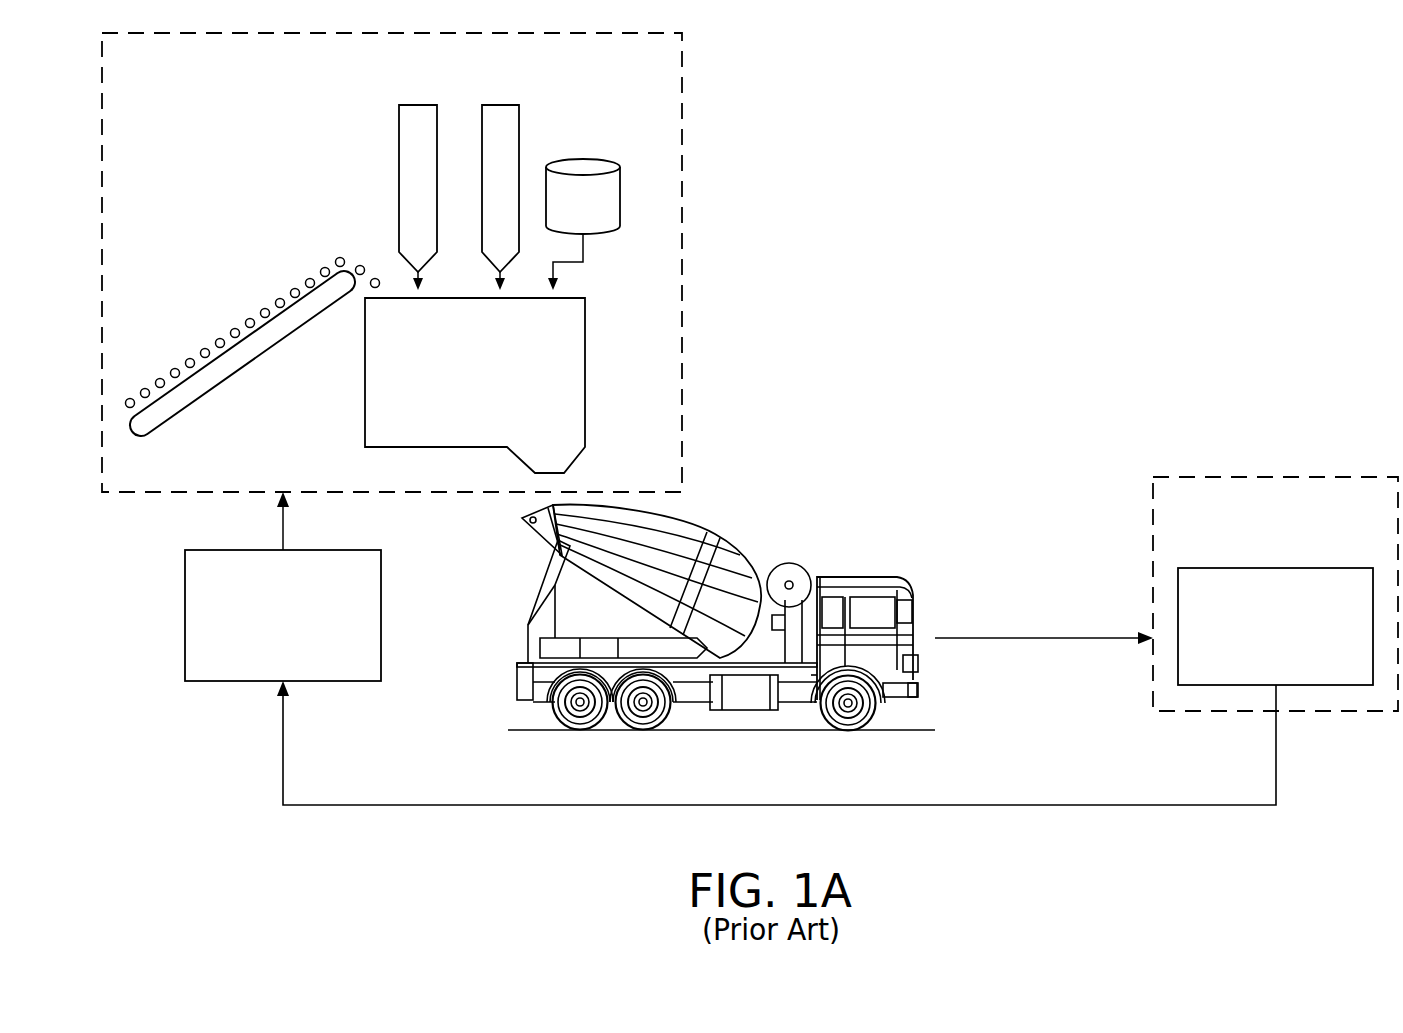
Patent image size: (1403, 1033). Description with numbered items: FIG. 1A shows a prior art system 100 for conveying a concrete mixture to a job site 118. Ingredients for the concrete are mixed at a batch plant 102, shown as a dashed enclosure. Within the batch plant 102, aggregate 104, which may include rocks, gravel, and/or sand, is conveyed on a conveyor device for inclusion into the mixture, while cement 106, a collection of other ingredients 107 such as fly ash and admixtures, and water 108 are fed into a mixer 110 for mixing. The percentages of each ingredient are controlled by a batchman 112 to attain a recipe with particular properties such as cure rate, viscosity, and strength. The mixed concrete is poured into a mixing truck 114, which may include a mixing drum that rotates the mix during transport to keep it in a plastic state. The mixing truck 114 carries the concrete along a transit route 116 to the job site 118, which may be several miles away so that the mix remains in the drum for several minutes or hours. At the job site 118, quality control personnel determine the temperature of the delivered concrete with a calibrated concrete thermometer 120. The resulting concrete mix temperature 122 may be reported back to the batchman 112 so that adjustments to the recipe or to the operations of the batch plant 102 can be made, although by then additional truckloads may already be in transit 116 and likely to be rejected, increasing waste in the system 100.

The prior art system 100 is at (750, 461).
The batch plant 102 is at (216, 93).
The aggregate 104 is at (235, 262).
The cement 106 is at (399, 178).
The other ingredients 107 is at (519, 150).
The water 108 is at (603, 227).
The mixer 110 is at (502, 391).
The batchman 112 is at (303, 638).
The mixing truck 114 is at (831, 576).
The transit route 116 is at (1063, 626).
The job site 118 is at (1230, 536).
The calibrated concrete thermometer 120 is at (1295, 665).
The concrete mix temperature 122 is at (1147, 888).